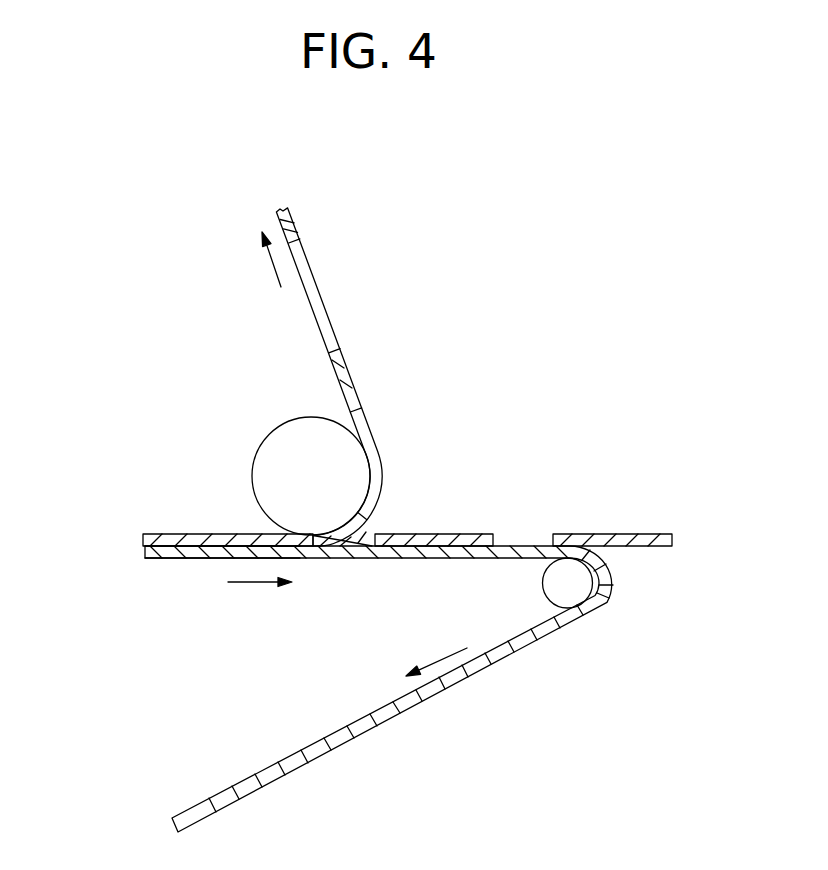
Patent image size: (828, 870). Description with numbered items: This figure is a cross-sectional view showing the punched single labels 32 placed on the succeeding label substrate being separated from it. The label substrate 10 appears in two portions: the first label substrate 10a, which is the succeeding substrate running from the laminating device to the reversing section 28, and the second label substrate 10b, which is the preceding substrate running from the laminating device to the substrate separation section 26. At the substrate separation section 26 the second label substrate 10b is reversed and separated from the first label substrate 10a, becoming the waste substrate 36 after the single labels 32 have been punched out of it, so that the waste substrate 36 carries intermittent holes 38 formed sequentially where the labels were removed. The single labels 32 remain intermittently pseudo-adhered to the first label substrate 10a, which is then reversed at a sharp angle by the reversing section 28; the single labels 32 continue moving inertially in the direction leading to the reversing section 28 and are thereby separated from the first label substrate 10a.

The label substrate 10 is at (273, 773).
The first label substrate 10a is at (180, 560).
The second label substrate 10b is at (173, 533).
The substrate separation section 26 is at (311, 477).
The reversing section 28 is at (572, 583).
The single labels 32 is at (245, 533).
The waste substrate 36 is at (347, 382).
The intermittent holes 38 is at (318, 298).